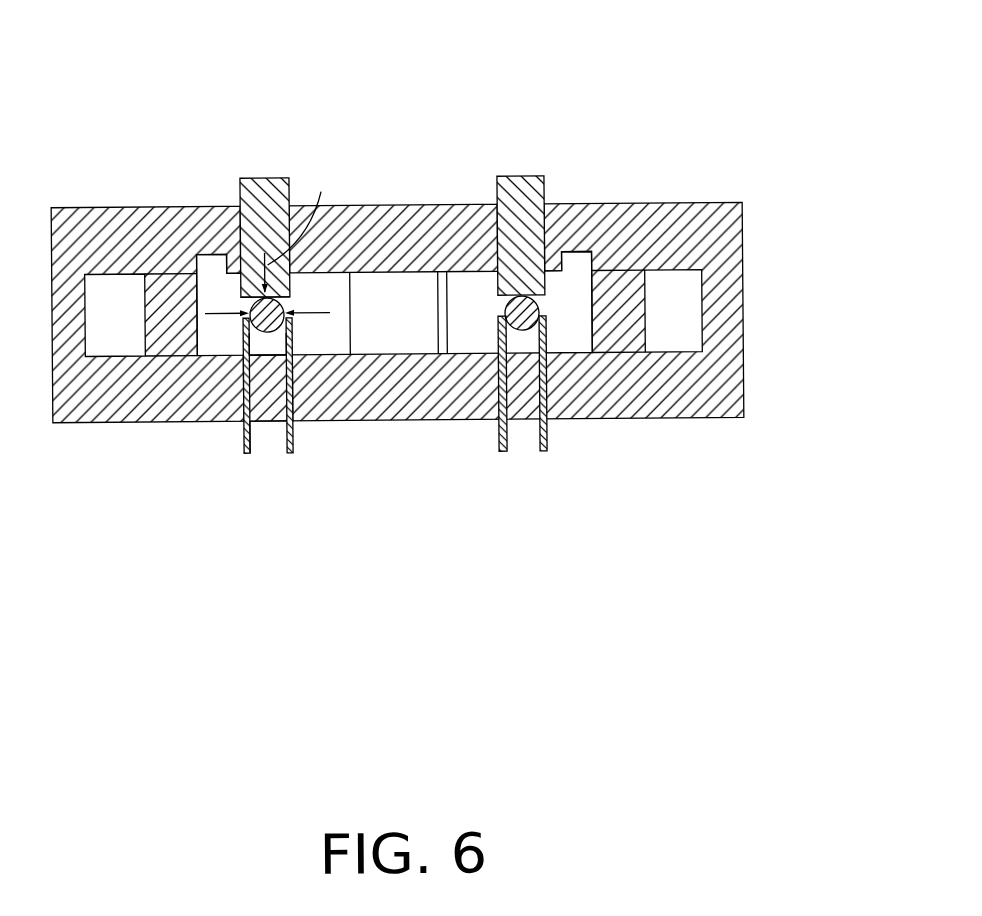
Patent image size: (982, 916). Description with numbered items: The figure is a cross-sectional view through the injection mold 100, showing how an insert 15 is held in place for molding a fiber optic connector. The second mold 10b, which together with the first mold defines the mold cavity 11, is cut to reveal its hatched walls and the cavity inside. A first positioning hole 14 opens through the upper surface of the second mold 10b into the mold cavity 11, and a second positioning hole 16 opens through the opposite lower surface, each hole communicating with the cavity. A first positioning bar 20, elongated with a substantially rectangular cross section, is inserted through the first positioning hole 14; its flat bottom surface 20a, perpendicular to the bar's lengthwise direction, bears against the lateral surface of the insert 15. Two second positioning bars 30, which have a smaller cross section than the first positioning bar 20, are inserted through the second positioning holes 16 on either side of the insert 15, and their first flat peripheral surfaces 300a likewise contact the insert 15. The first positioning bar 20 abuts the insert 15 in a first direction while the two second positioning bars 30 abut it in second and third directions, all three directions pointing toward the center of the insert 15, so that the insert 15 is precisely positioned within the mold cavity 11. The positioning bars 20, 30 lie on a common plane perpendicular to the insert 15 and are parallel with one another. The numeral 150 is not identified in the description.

The injection mold 100 is at (407, 271).
The second mold 10b is at (687, 229).
The mold cavity 11 is at (575, 276).
The first positioning hole 14 is at (237, 266).
The insert 15 is at (247, 319).
The ball seat recess 150 is at (252, 332).
The second positioning hole 16 is at (289, 406).
The first positioning bar 20 is at (260, 191).
The bottom surface 20a is at (283, 301).
The second positioning bar 30 is at (246, 443).
The first flat peripheral surface 300a is at (252, 428).